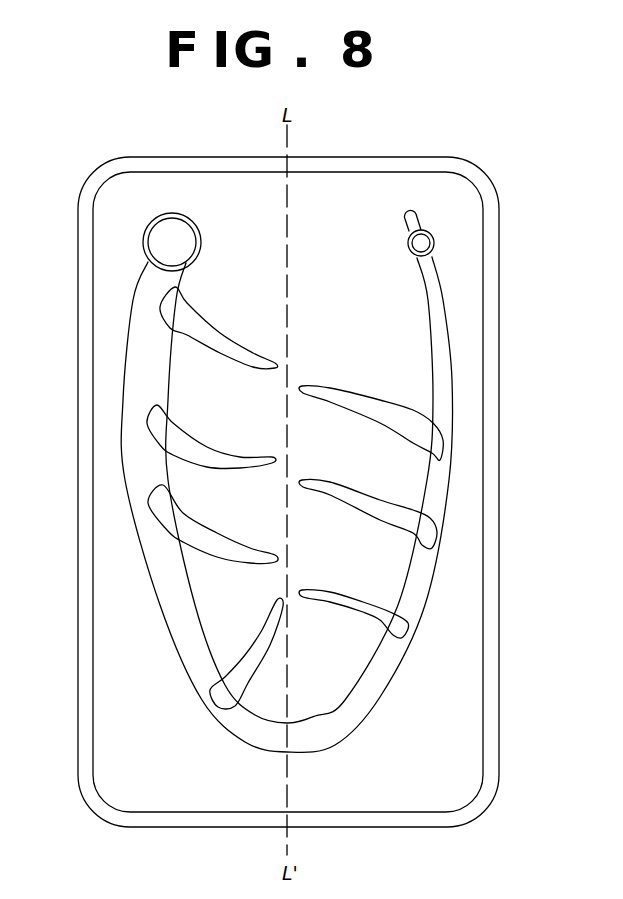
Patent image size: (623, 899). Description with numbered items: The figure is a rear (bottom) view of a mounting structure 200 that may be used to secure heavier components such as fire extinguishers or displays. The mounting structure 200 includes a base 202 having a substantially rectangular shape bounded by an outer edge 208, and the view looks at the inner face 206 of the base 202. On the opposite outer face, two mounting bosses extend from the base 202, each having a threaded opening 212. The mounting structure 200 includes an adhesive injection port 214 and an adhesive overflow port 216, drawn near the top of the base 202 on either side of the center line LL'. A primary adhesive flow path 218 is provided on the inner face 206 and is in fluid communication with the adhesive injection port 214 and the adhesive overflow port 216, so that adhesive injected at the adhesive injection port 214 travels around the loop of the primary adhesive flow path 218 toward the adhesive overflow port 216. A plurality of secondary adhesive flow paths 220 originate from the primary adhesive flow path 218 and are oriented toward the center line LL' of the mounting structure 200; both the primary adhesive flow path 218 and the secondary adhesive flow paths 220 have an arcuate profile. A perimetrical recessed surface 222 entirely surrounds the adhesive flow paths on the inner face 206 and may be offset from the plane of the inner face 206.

The mounting structure 200 is at (79, 160).
The base 202 is at (119, 261).
The inner face 206 is at (244, 794).
The outer edge 208 is at (500, 585).
The threaded opening 212 is at (7, 625).
The adhesive injection port 214 is at (170, 243).
The adhesive overflow port 216 is at (425, 240).
The primary adhesive flow path 218 is at (356, 703).
The secondary adhesive flow paths 220 is at (375, 610).
The perimetrical recessed surface 222 is at (481, 800).